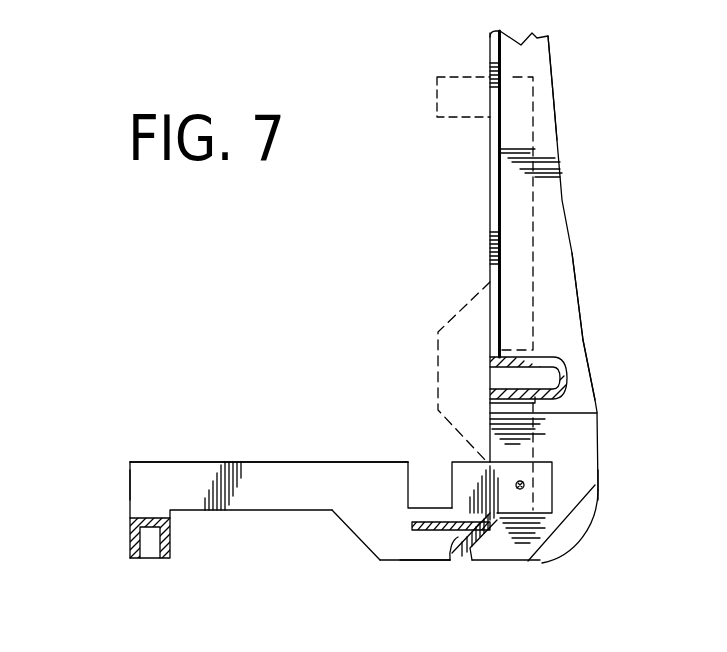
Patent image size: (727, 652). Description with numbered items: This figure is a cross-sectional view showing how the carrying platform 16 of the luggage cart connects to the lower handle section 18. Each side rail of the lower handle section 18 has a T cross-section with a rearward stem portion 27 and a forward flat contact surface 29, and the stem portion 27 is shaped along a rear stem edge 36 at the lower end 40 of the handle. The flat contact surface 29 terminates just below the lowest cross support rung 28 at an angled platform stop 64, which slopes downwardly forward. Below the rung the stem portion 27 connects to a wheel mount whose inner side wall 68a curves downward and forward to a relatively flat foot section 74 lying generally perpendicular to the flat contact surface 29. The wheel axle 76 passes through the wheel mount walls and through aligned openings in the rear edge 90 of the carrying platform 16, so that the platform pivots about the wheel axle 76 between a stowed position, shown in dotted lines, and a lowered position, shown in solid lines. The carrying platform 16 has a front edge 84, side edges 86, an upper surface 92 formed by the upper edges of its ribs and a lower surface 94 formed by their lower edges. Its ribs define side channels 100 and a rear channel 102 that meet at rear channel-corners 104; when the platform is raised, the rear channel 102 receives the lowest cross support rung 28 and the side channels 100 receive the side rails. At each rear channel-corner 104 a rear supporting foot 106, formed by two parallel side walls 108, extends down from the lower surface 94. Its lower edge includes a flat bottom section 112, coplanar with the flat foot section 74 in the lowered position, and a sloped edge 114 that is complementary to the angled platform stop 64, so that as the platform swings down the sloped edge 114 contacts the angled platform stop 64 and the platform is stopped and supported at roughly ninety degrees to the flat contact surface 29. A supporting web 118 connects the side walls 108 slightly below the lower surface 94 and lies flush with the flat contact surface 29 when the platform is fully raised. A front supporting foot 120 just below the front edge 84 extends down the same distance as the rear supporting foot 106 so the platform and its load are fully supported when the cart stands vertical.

The carrying platform 16 is at (467, 328).
The lower handle section 18 is at (572, 253).
The stem portion 27 is at (557, 162).
The cross support rung 28 is at (568, 376).
The flat contact surface 29 is at (490, 181).
The rear stem edge 36 is at (555, 95).
The lower end 40 is at (583, 341).
The angled platform stop 64 is at (448, 563).
The inner side wall 68a is at (517, 548).
The flat foot section 74 is at (543, 563).
The wheel axle 76 is at (523, 482).
The front edge 84 is at (130, 487).
The side edge 86 is at (163, 486).
The rear edge 90 is at (552, 490).
The upper surface 92 is at (320, 461).
The lower surface 94 is at (228, 511).
The side channel 100 is at (130, 519).
The rear channel 102 is at (452, 481).
The rear channel-corner 104 is at (578, 528).
The rear supporting foot 106 is at (367, 548).
The side wall 108 is at (370, 508).
The flat bottom section 112 is at (420, 567).
The sloped edge 114 is at (463, 563).
The supporting web 118 is at (423, 521).
The front supporting foot 120 is at (150, 547).